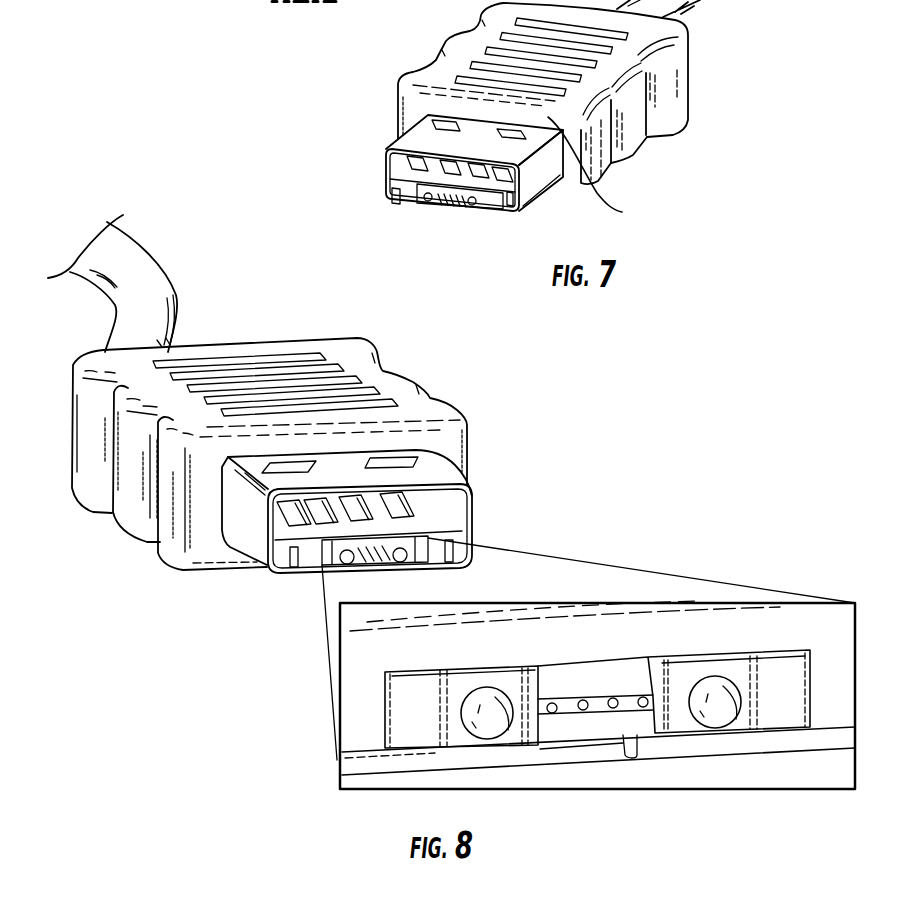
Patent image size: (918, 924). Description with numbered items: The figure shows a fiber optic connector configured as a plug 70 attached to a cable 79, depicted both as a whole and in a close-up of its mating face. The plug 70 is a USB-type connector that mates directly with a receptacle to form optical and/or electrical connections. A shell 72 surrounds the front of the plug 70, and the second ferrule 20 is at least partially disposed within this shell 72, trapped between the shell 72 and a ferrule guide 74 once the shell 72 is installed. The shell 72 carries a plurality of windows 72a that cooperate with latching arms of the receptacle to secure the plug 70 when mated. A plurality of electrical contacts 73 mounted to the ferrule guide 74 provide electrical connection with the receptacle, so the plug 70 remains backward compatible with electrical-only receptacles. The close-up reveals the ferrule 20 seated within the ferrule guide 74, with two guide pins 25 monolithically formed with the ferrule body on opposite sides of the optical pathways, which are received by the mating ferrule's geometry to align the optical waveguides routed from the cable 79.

In FIG. 7, the plug 70 is at (384, 121).
In FIG. 8, the plug 70 is at (445, 360).
In FIG. 7, the shell 72 is at (386, 161).
In FIG. 8, the shell 72 is at (460, 477).
In FIG. 7, the windows 72a is at (622, 212).
In FIG. 7, the electrical contacts 73 is at (427, 204).
In FIG. 8, the electrical contacts 73 is at (413, 518).
In FIG. 8, the ferrule guide 74 is at (787, 630).
In FIG. 7, the cable 79 is at (752, 0).
In FIG. 8, the cable 79 is at (139, 272).
In FIG. 7, the second ferrule 20 is at (420, 207).
In FIG. 8, the second ferrule 20 is at (787, 717).
In FIG. 8, the guide pin 25 is at (720, 710).